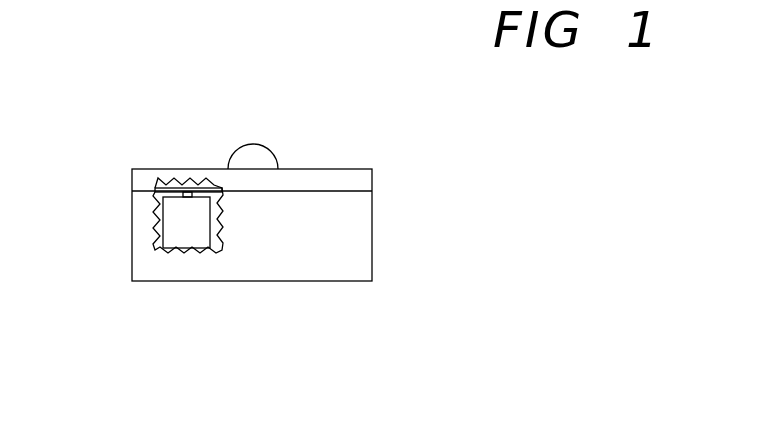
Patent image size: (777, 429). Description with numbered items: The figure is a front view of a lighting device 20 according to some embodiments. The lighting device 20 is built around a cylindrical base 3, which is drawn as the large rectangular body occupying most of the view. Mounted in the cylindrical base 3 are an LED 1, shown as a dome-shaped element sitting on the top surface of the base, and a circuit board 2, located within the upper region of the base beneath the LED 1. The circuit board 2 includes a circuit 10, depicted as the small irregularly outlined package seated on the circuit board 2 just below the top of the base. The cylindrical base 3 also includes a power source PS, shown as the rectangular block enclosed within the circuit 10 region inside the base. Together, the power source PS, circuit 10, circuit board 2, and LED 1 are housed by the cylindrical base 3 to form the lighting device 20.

The lighting device 20 is at (637, 79).
The cylindrical base 3 is at (367, 265).
The LED 1 is at (255, 153).
The circuit 10 is at (178, 183).
The circuit board 2 is at (188, 184).
The power source PS is at (177, 213).